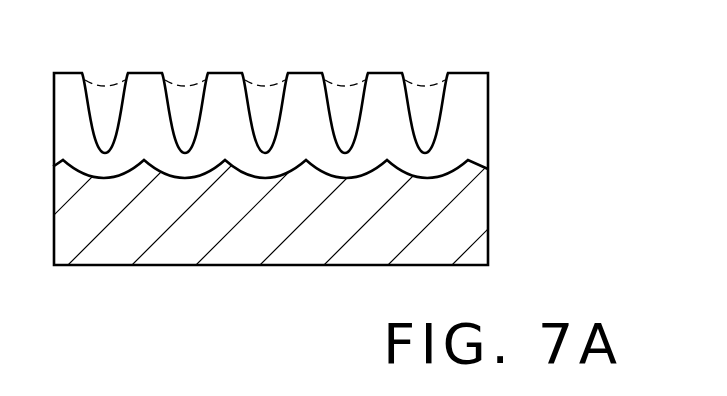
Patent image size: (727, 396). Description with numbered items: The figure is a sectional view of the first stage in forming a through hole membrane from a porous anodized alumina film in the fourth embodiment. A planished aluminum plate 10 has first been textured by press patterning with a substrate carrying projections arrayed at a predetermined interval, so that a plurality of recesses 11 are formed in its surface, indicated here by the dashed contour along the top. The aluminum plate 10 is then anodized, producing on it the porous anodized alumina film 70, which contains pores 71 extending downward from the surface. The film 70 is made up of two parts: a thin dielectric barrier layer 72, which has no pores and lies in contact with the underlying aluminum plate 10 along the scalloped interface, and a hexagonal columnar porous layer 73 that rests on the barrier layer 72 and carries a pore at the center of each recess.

The aluminum plate 10 is at (458, 219).
The recesses 11 is at (433, 86).
The porous anodized alumina film 70 is at (322, 91).
The pores 71 is at (425, 128).
The dielectric barrier layer 72 is at (501, 135).
The hexagonal columnar porous layer 73 is at (501, 72).